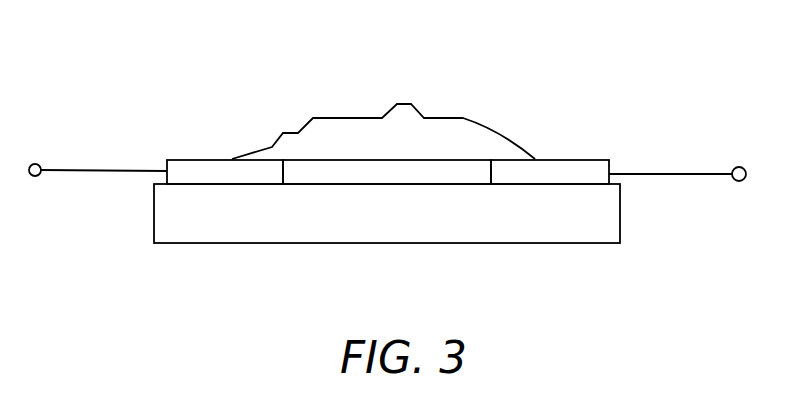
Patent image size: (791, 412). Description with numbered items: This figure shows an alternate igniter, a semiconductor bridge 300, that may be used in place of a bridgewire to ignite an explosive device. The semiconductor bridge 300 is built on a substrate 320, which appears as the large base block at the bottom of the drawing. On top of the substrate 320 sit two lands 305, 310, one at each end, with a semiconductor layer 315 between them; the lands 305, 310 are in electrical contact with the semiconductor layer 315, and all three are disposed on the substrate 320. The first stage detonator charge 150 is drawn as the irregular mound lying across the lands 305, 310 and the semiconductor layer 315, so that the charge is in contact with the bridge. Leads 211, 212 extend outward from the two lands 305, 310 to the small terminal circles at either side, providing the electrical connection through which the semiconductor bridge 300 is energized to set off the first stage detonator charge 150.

The semiconductor bridge 300 is at (565, 103).
The substrate 320 is at (222, 243).
The land 305 is at (190, 159).
The semiconductor layer 315 is at (443, 162).
The land 310 is at (578, 160).
The first stage detonator charge 150 is at (345, 118).
The first lead terminal 211 is at (41, 163).
The second lead terminal 212 is at (742, 182).